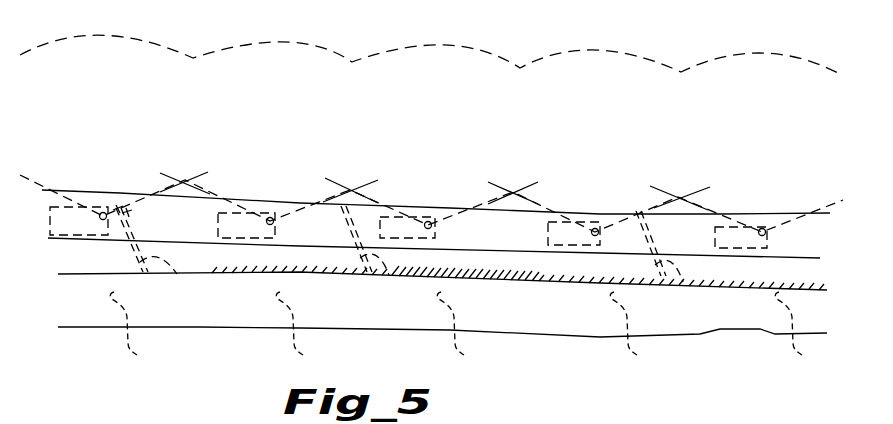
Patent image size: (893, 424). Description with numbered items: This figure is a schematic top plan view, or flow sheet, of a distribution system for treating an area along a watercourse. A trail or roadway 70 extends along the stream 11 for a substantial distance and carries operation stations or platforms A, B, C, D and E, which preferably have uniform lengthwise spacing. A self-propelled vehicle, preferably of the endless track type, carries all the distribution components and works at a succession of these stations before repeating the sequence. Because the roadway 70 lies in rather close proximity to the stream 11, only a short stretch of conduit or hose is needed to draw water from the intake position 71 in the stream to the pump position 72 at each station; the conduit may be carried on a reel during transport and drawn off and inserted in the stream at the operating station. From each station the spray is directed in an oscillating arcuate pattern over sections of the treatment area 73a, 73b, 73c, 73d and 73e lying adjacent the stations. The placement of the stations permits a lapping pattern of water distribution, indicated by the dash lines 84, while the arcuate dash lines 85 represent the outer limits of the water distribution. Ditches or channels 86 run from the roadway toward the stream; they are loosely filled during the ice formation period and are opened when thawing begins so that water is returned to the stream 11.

The arcuate dash lines 85 is at (455, 45).
The section of the treatment area 73a is at (125, 130).
The section of the treatment area 73b is at (290, 131).
The section of the treatment area 73c is at (447, 138).
The section of the treatment area 73d is at (625, 141).
The section of the treatment area 73e is at (803, 145).
The dash lines 84 is at (187, 175).
The pump position 72 is at (108, 216).
The trail or roadway 70 is at (500, 241).
The ditches or channels 86 is at (683, 298).
The stream 11 is at (539, 315).
The intake position 71 is at (460, 332).